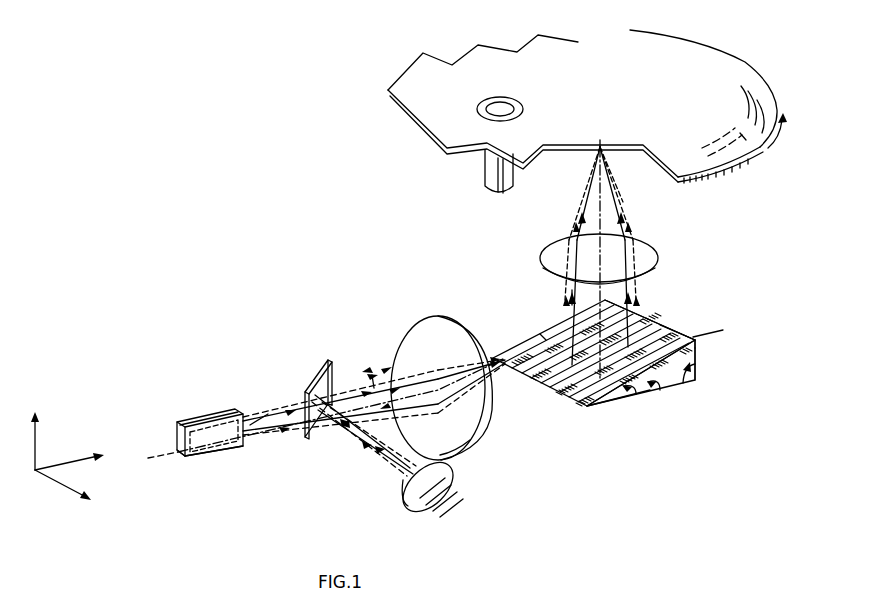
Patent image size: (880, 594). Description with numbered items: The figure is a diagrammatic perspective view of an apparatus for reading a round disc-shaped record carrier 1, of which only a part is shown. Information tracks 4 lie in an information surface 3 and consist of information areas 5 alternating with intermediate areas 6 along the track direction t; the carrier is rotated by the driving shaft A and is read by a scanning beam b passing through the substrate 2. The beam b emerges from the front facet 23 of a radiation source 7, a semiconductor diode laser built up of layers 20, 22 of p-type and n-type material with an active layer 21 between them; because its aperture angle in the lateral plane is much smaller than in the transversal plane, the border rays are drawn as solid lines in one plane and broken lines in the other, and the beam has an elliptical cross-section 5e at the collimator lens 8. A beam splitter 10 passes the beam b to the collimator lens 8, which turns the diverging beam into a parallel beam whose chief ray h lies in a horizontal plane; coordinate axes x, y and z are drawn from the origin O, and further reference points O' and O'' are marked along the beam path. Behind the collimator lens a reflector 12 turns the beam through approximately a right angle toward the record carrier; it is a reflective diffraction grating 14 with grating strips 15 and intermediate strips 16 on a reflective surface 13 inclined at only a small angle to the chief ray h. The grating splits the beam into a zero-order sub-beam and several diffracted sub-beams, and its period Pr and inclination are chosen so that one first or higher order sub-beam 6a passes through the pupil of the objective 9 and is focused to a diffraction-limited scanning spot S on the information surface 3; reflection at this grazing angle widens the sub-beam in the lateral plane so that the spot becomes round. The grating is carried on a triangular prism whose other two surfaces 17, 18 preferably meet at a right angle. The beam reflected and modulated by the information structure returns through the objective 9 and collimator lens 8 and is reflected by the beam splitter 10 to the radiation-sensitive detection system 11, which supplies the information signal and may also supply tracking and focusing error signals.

The record carrier 1 is at (406, 131).
The substrate 2 is at (694, 176).
The information surface 3 is at (689, 55).
The information tracks 4 is at (752, 110).
The information areas 5 is at (730, 152).
The intermediate areas 6 is at (747, 141).
The first-order sub-beam 6a is at (568, 298).
The radiation source 7 is at (210, 395).
The collimator lens 8 is at (490, 410).
The objective 9 is at (650, 263).
The beam splitter 10 is at (306, 440).
The radiation-sensitive detection system 11 is at (405, 500).
The reflector 12 is at (723, 288).
The reflective surface 13 is at (597, 404).
The diffraction grating 14 is at (668, 318).
The grating strips 15 is at (678, 337).
The intermediate strips 16 is at (694, 343).
The prism surface 17 is at (695, 357).
The prism surface 18 is at (617, 400).
The semiconductor layer 20 is at (199, 416).
The active layer 21 is at (199, 456).
The semiconductor layer 22 is at (178, 452).
The front facet 23 is at (243, 414).
The elliptical cross-section 5e is at (470, 440).
The driving shaft A is at (509, 171).
The scanning spot S is at (607, 134).
The track direction t is at (777, 141).
The origin O is at (153, 463).
The second origin O' is at (719, 324).
The third origin O'' is at (621, 178).
The grating period Pr is at (540, 335).
The chief ray h is at (364, 372).
The scanning beam b is at (265, 405).
The x axis x is at (70, 467).
The y axis y is at (63, 496).
The z axis z is at (42, 441).